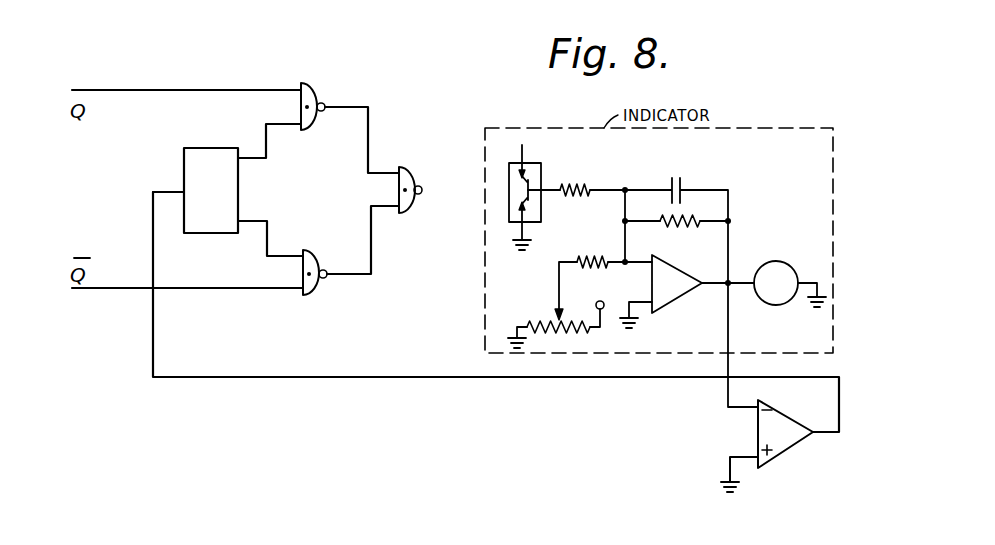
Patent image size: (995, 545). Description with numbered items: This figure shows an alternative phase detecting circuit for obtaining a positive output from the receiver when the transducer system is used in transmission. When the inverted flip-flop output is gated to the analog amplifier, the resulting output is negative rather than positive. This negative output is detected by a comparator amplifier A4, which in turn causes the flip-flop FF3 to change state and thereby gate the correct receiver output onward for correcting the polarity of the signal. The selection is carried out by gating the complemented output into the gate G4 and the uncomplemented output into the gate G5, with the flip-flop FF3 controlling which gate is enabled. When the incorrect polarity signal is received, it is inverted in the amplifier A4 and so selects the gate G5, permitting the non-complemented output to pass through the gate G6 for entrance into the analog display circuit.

The gate G5 is at (320, 87).
The gate G4 is at (318, 291).
The gate G6 is at (412, 171).
The flip-flop FF3 is at (228, 190).
The comparator amplifier A4 is at (767, 446).